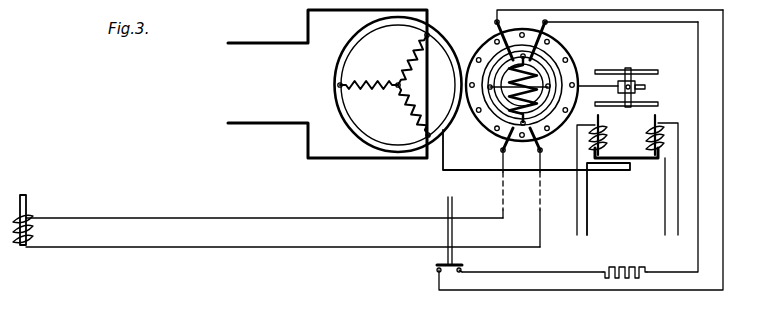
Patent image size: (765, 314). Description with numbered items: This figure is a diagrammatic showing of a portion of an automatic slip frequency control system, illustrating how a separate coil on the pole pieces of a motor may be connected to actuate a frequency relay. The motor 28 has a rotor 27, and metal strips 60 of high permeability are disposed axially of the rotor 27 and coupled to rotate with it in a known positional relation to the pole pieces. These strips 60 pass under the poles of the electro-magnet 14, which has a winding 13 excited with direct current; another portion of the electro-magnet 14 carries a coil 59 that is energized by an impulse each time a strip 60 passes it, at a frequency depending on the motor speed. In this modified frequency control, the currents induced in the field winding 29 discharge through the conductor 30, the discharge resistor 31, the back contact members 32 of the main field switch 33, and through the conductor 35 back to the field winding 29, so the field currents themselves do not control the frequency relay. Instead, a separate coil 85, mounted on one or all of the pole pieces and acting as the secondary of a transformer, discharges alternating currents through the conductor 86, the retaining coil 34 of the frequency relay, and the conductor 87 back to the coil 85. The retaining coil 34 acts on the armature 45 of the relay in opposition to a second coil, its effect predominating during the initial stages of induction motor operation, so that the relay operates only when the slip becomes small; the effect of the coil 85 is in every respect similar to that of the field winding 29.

The rotor 27 is at (333, 62).
The motor 28 is at (475, 34).
The field winding 29 is at (537, 72).
The separate coil 85 is at (515, 95).
The metal strips 60 is at (655, 105).
The coil 59 is at (663, 126).
The winding 13 is at (606, 135).
The electro-magnet 14 is at (648, 163).
The conductor 30 is at (699, 129).
The discharge resistor 31 is at (630, 268).
The conductor 35 is at (665, 291).
The main field switch 33 is at (484, 207).
The back contact members 32 is at (465, 272).
The conductor 87 is at (366, 206).
The conductor 86 is at (351, 236).
The armature 45 is at (30, 200).
The retaining coil 34 is at (32, 227).